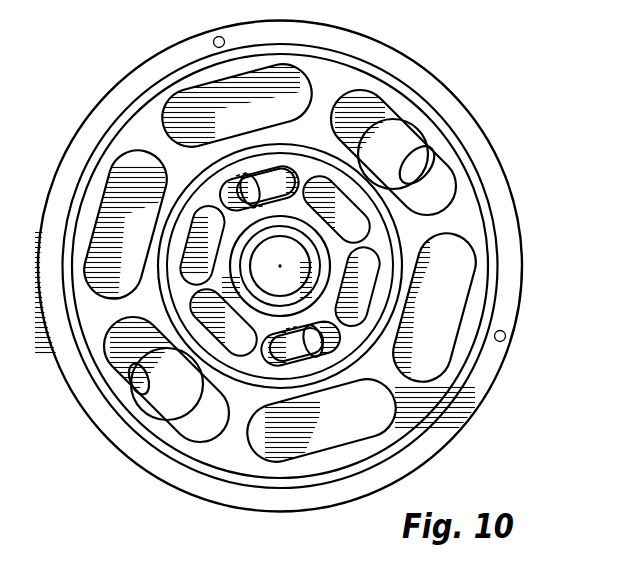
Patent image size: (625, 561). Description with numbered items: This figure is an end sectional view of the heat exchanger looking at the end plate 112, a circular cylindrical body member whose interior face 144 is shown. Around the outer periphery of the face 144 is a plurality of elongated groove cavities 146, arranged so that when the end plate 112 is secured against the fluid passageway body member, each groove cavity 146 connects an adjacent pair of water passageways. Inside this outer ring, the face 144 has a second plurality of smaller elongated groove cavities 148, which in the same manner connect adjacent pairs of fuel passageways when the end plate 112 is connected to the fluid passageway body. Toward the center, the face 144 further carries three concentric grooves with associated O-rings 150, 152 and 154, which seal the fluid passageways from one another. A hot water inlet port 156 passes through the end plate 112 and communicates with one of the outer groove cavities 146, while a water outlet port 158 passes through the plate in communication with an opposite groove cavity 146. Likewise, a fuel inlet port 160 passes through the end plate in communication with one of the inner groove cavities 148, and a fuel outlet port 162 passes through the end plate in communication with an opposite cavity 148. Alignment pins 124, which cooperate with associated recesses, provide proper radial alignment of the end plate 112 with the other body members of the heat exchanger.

The end plate 112 is at (517, 314).
The alignment pin 124 is at (216, 37).
The interior face 144 is at (512, 229).
The elongated groove cavity 146 is at (440, 184).
The elongated groove cavity 148 is at (372, 228).
The concentric groove and O-ring 150 is at (250, 484).
The concentric groove and O-ring 152 is at (250, 384).
The concentric groove and O-ring 154 is at (232, 267).
The hot water inlet port 156 is at (420, 140).
The water outlet port 158 is at (140, 396).
The fuel inlet port 160 is at (312, 362).
The fuel outlet port 162 is at (250, 178).